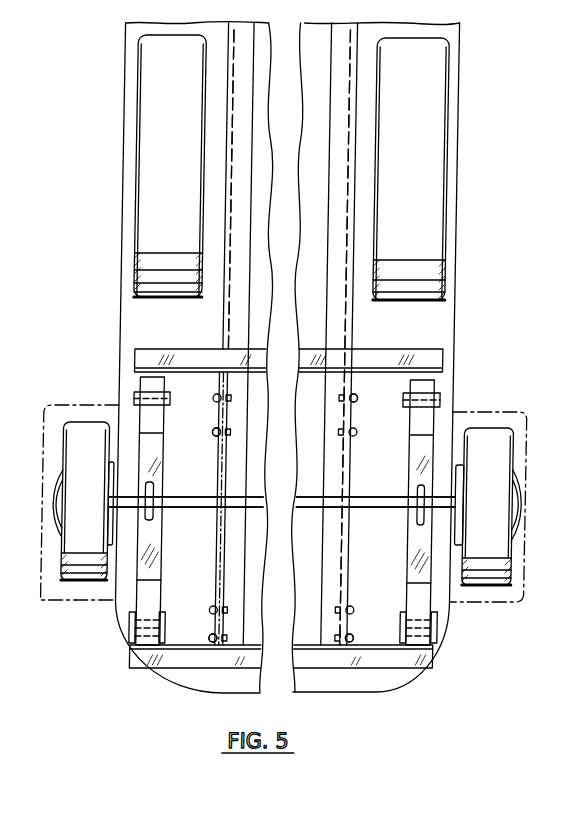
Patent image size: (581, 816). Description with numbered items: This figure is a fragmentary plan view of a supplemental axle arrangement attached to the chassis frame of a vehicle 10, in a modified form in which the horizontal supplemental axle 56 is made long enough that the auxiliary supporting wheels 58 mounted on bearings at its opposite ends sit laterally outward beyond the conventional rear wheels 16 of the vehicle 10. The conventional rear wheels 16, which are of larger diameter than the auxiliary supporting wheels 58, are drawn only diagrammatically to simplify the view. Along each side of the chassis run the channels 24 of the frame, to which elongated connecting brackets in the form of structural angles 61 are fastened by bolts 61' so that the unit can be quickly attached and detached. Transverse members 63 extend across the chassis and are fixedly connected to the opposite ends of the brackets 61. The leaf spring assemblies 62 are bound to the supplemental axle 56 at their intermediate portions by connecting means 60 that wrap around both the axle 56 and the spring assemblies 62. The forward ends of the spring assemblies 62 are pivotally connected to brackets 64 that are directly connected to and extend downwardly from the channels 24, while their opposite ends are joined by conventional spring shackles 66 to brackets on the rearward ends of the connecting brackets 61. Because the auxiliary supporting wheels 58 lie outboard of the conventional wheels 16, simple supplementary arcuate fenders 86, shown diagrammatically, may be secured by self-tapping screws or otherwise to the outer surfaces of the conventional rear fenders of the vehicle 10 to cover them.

The vehicle 10 is at (119, 172).
The conventional rear wheels 16 is at (145, 104).
The channels of the chassis frame 24 is at (237, 127).
The supplemental axle 56 is at (194, 512).
The auxiliary supporting wheels 58 is at (73, 440).
The connecting means 60 is at (152, 492).
The structural angles 61 is at (282, 508).
The bolts 61' is at (283, 518).
The leaf spring assemblies 62 is at (157, 425).
The transverse members 63 is at (191, 358).
The brackets 64 is at (165, 383).
The spring shackles 66 is at (136, 627).
The supplementary arcuate fenders 86 is at (82, 405).